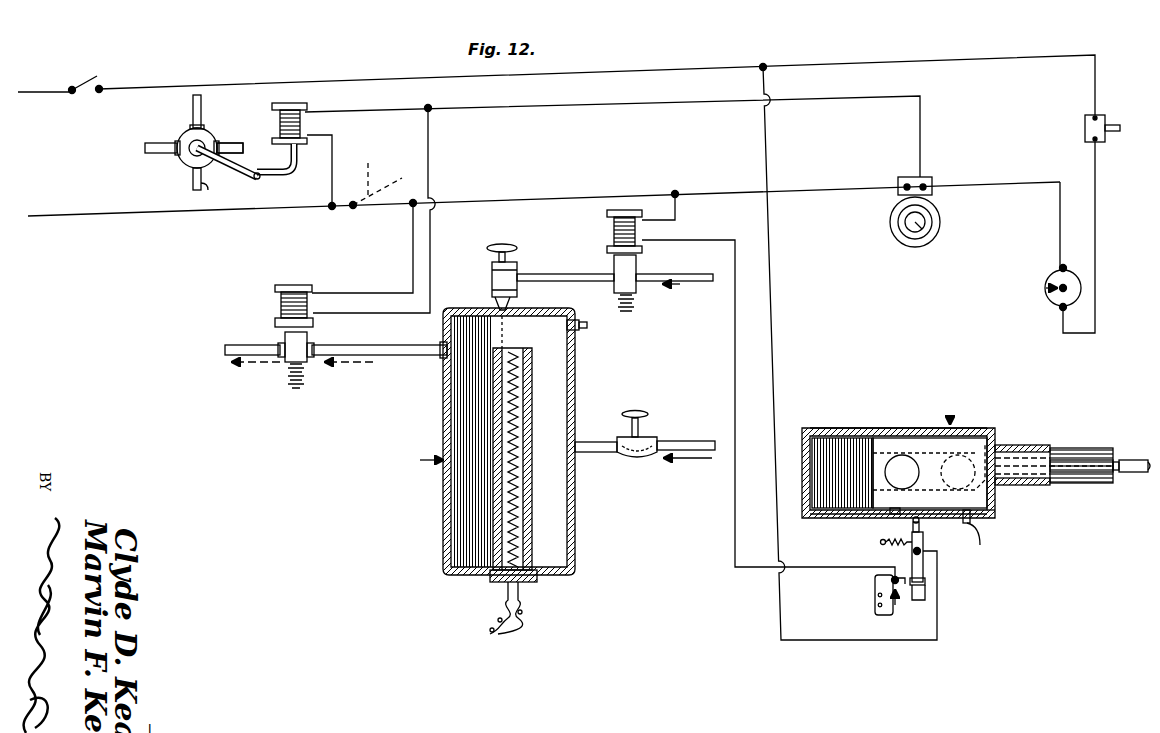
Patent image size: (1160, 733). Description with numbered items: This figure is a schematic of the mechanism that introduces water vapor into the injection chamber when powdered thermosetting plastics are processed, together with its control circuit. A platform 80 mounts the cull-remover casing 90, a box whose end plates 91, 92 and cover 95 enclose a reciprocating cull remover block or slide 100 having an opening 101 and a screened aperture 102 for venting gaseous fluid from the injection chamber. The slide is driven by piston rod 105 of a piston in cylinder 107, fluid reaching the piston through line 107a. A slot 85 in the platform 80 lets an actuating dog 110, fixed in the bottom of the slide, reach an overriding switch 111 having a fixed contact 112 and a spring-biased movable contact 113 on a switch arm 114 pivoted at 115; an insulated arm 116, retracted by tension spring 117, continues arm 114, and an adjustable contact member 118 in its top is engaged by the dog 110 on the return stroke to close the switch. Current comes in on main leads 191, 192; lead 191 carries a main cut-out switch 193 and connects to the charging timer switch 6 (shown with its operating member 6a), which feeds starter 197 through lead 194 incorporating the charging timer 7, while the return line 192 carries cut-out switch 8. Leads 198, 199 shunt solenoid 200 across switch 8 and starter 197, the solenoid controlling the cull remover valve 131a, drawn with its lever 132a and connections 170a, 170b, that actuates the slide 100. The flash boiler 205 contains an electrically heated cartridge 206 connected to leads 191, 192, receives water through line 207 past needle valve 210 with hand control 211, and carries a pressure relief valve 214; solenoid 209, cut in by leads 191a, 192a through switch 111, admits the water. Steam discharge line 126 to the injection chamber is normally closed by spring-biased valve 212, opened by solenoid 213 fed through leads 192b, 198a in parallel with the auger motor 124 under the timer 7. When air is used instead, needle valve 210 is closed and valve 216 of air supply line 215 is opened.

The charging timer switch 6 is at (1085, 130).
The switch button 6a is at (1120, 127).
The charging timer 7 is at (1076, 283).
The cut-out switch 8 is at (368, 222).
The platform 80 is at (848, 520).
The longitudinal slot 85 is at (892, 516).
The cull-remover casing 90 is at (986, 428).
The end plate 91 is at (995, 516).
The end plate 92 is at (802, 456).
The cover 95 is at (872, 412).
The cull remover block 100 is at (885, 445).
The opening 101 is at (895, 478).
The screened aperture 102 is at (998, 430).
The piston rod 105 is at (1040, 448).
The cylinder 107 is at (1066, 484).
The fluid line 107a is at (1134, 460).
The actuating dog 110 is at (988, 533).
The overriding switch 111 is at (878, 547).
The fixed contact 112 is at (889, 580).
The movable contact 113 is at (920, 598).
The switch arm 114 is at (925, 581).
The pivot 115 is at (923, 550).
The insulated switch arm 116 is at (923, 538).
The tension spring 117 is at (910, 550).
The adjustable contact member 118 is at (913, 525).
The auger motor 124 is at (940, 226).
The steam discharge line 126 is at (250, 344).
The cull remover valve 131a is at (164, 138).
The valve lever 132a is at (205, 184).
The valve port 170a is at (234, 142).
The valve port 170b is at (201, 110).
The main current lead 191 is at (162, 82).
The lead 191a is at (766, 140).
The main current lead 192 is at (140, 215).
The lead 192a is at (684, 218).
The lead 192b is at (413, 260).
The main cut-out switch 193 is at (73, 92).
The lead 194 is at (1060, 236).
The starter 197 is at (932, 192).
The lead 198 is at (645, 106).
The lead 198a is at (430, 170).
The lead 199 is at (332, 186).
The solenoid 200 is at (304, 103).
The flash boiler 205 is at (575, 386).
The electrically heated cartridge 206 is at (528, 428).
The water supply line 207 is at (556, 274).
The solenoid 209 is at (607, 238).
The needle valve 210 is at (492, 284).
The hand adjusting control 211 is at (510, 248).
The spring-biased valve 212 is at (285, 364).
The solenoid 213 is at (275, 306).
The pressure relief valve 214 is at (582, 318).
The air supply line 215 is at (700, 440).
The valve 216 is at (646, 432).